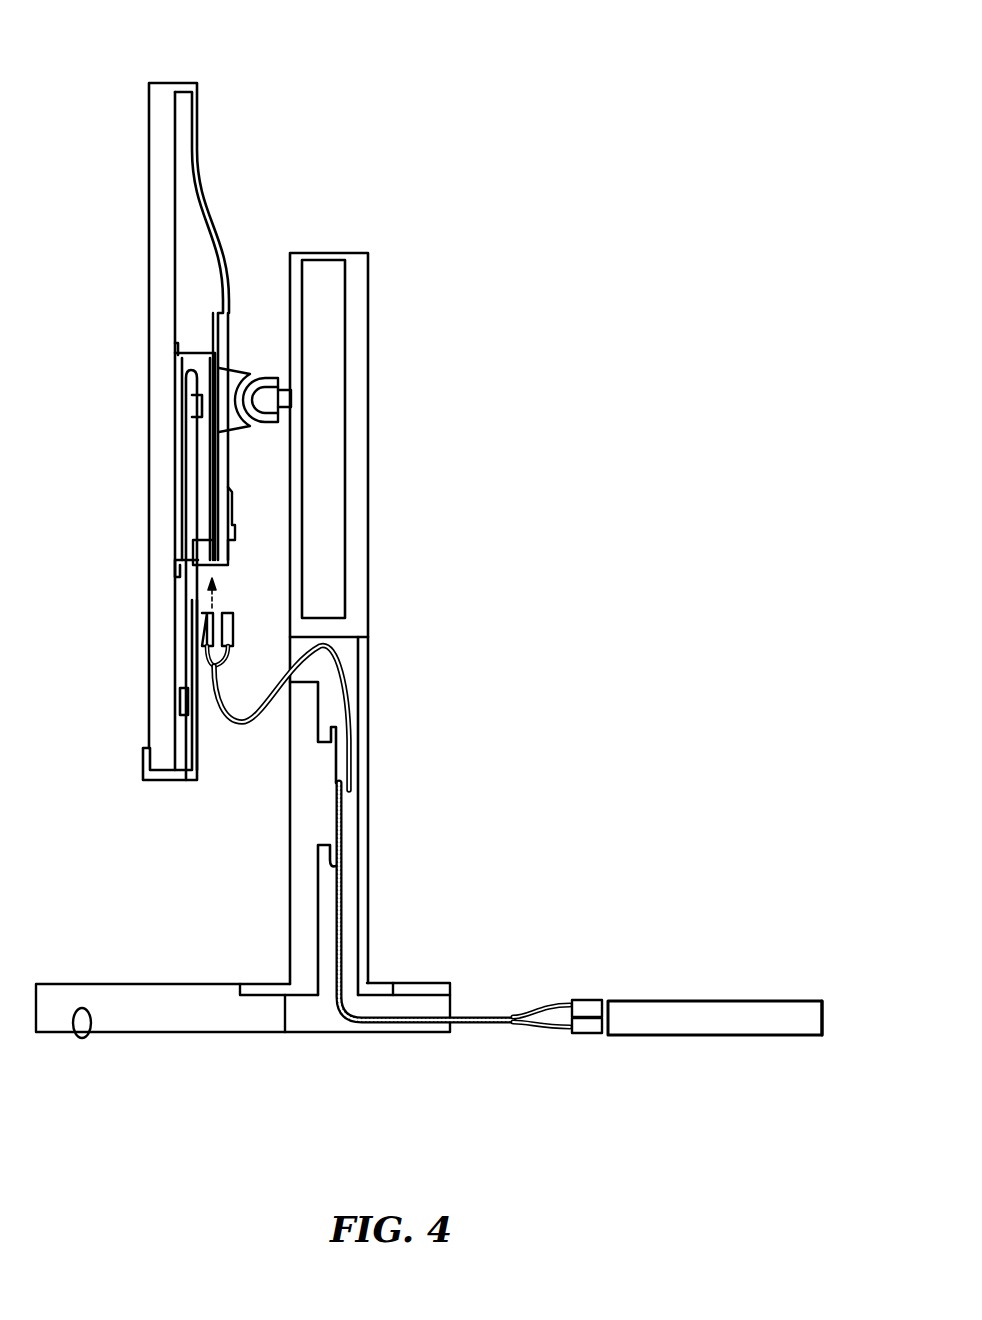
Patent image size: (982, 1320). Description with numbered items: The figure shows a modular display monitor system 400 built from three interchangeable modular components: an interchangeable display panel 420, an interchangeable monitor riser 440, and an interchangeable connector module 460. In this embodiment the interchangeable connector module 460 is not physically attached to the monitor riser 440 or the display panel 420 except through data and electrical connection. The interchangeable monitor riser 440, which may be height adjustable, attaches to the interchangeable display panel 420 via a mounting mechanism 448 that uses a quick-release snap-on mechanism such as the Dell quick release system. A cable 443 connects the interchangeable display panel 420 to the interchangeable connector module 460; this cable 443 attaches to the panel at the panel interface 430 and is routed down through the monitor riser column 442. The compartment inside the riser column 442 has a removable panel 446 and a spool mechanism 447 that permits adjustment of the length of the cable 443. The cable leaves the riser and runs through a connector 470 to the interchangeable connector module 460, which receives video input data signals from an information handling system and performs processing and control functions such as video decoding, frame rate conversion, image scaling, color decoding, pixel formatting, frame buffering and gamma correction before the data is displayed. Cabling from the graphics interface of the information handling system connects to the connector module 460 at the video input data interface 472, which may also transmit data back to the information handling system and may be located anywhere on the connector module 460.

The modular display monitor system 400 is at (569, 103).
The interchangeable display panel 420 is at (168, 78).
The panel interface 430 is at (222, 548).
The interchangeable monitor riser 440 is at (368, 407).
The monitor riser column 442 is at (373, 648).
The cable 443 is at (352, 763).
The removable panel 446 is at (367, 707).
The spool mechanism 447 is at (329, 830).
The mounting mechanism 448 is at (258, 368).
The interchangeable connector module 460 is at (703, 983).
The connector 470 is at (612, 997).
The video input data interface 472 is at (823, 1013).